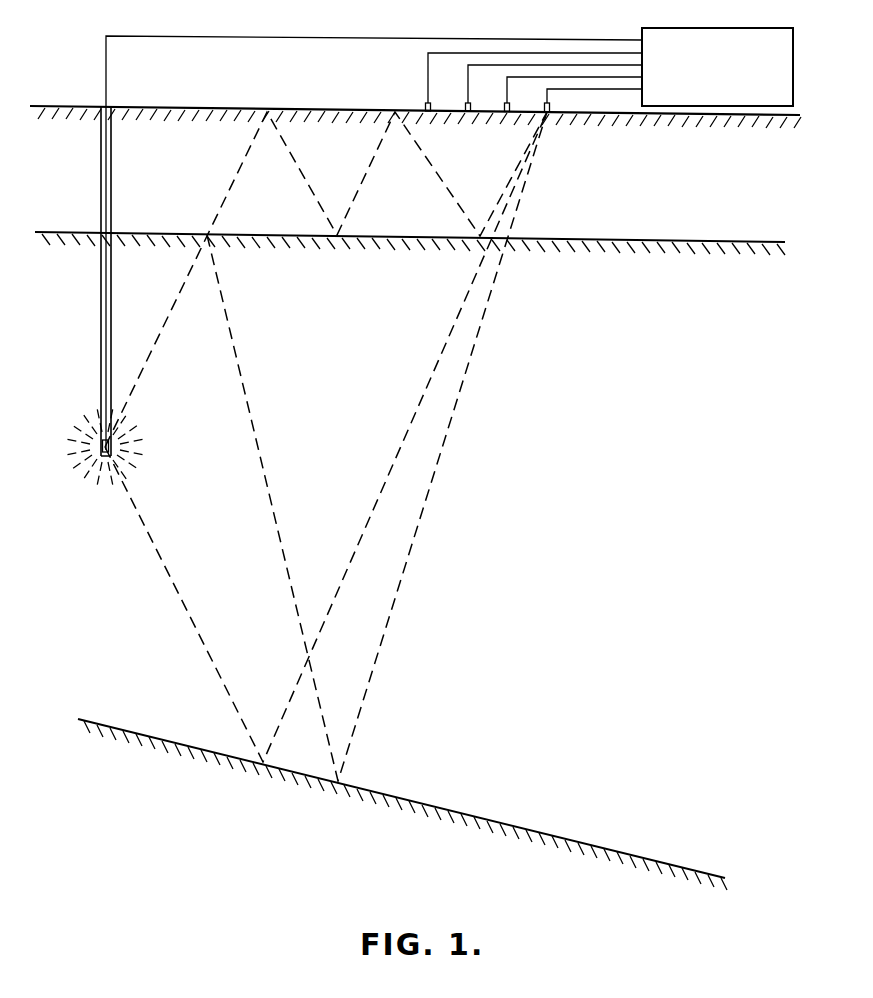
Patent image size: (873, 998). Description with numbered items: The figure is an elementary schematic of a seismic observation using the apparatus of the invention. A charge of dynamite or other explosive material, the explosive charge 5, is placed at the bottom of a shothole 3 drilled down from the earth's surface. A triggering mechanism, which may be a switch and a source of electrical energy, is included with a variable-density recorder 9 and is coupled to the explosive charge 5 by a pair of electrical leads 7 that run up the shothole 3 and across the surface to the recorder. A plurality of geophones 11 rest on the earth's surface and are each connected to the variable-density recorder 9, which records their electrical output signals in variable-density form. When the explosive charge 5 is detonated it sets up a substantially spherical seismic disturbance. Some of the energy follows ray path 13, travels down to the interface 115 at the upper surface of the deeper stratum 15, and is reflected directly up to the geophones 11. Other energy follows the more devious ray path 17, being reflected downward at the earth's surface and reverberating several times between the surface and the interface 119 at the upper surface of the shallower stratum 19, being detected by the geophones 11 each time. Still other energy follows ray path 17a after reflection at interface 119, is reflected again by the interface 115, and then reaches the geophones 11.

The shothole 3 is at (112, 163).
The explosive charge 5 is at (100, 448).
The electrical leads 7 is at (258, 37).
The variable-density recorder 9 is at (642, 32).
The geophones 11 is at (425, 103).
The ray path 13 is at (192, 622).
The stratum 15 is at (330, 883).
The ray path 17 is at (163, 306).
The ray path 17a is at (251, 425).
The stratum 19 is at (626, 489).
The interface 115 is at (600, 846).
The interface 119 is at (676, 241).